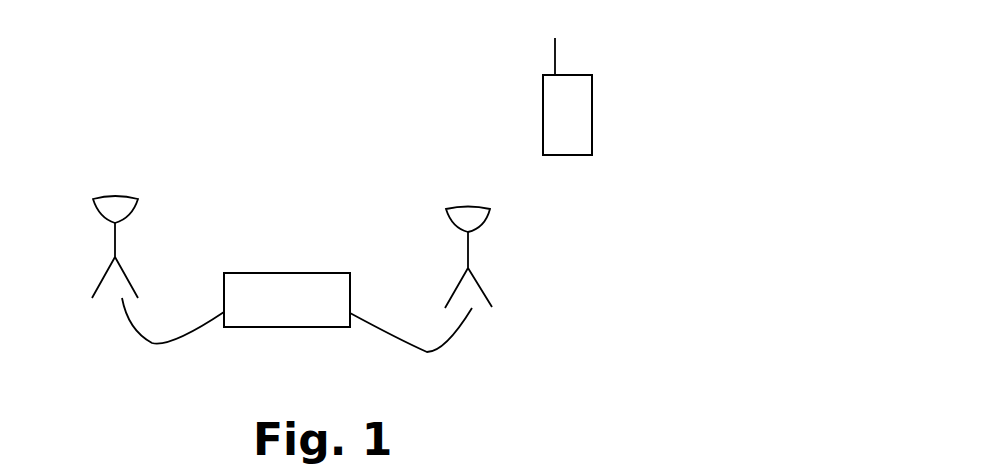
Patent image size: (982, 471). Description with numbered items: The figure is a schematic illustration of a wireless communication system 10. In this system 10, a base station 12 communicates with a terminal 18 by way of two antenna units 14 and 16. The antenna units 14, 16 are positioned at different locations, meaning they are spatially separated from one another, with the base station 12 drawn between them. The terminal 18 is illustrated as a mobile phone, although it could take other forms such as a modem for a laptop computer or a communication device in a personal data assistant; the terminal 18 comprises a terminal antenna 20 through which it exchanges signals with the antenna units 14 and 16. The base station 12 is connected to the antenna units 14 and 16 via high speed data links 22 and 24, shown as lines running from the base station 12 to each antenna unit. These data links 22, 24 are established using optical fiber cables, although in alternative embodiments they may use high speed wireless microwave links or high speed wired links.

The communication system 10 is at (137, 133).
The base station 12 is at (311, 327).
The antenna unit 14 is at (115, 236).
The antenna unit 16 is at (472, 248).
The terminal 18 is at (583, 115).
The terminal antenna 20 is at (558, 63).
The data link 22 is at (138, 338).
The data link 24 is at (460, 327).